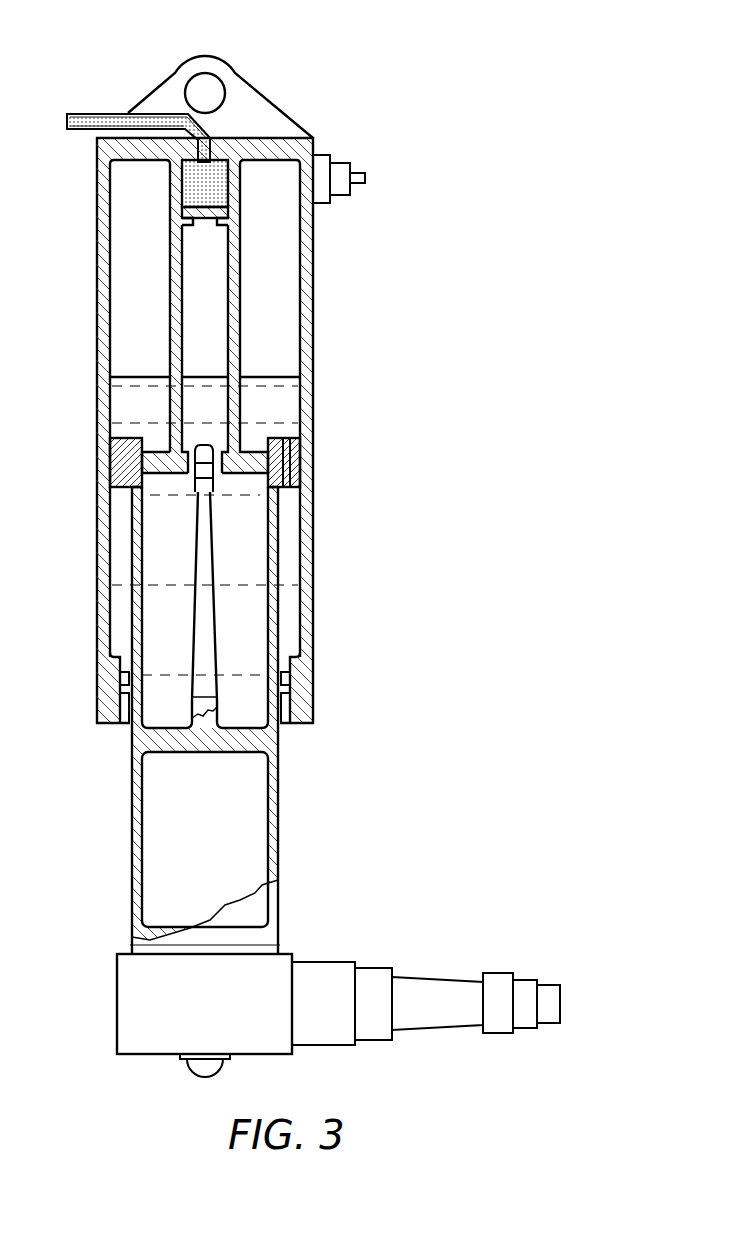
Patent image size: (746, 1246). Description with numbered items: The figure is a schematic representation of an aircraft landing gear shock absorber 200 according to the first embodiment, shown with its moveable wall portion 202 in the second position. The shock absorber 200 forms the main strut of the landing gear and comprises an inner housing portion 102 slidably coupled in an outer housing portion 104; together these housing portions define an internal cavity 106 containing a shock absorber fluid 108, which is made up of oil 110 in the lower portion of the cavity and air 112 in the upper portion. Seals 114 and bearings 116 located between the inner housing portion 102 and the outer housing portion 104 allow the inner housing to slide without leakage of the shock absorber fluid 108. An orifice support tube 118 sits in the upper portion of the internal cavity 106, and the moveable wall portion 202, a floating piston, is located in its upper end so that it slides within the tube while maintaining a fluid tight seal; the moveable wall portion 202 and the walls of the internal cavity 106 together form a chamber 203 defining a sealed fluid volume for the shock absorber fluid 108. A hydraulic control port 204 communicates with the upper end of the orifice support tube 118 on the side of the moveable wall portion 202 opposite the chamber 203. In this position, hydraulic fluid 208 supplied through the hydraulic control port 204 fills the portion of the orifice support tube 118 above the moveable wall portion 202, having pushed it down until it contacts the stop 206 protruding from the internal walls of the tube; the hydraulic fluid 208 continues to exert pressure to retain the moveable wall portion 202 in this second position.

The shock absorber 200 is at (294, 542).
The moveable wall portion 202 is at (206, 212).
The hydraulic control port 204 is at (82, 113).
The stop 206 is at (185, 226).
The hydraulic fluid 208 is at (188, 188).
The outer housing portion 104 is at (97, 358).
The air 112 is at (272, 246).
The orifice support tube 118 is at (168, 300).
The chamber 203 is at (212, 286).
The shock absorber fluid 108 is at (285, 377).
The bearings 116 is at (118, 462).
The seals 114 is at (120, 670).
The internal cavity 106 is at (250, 520).
The oil 110 is at (250, 608).
The inner housing portion 102 is at (280, 797).